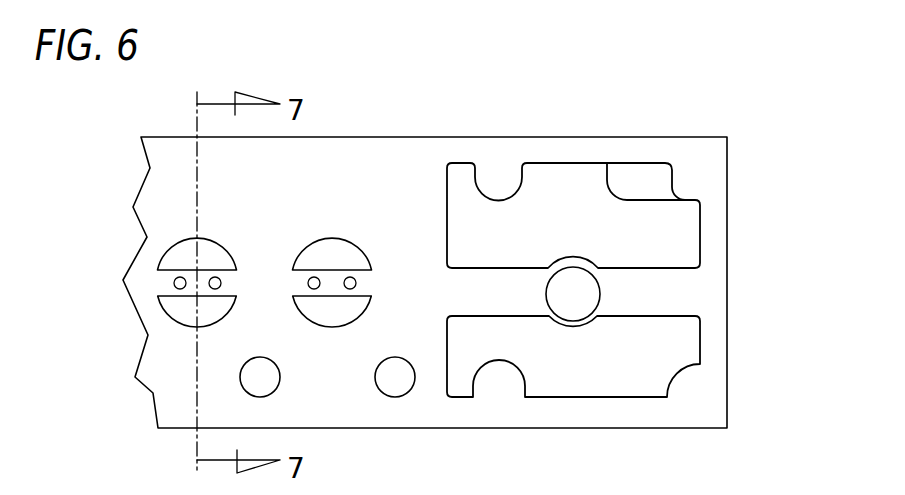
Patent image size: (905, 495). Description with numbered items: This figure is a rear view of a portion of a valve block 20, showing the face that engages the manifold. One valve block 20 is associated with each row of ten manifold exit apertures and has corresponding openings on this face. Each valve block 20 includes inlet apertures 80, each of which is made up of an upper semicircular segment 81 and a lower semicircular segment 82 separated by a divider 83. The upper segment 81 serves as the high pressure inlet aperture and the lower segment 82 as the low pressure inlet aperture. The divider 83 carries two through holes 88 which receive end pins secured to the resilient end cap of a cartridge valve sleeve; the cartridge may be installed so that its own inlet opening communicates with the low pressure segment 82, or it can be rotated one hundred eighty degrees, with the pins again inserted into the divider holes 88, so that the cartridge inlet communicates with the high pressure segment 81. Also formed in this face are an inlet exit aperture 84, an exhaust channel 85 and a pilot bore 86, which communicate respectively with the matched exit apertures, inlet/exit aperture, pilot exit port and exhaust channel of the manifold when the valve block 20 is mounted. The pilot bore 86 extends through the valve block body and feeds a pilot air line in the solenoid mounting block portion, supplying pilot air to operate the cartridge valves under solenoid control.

The valve block 20 is at (731, 179).
The inlet aperture 80 is at (251, 255).
The upper semicircular segment 81 is at (185, 258).
The lower semicircular segment 82 is at (342, 312).
The divider 83 is at (359, 282).
The inlet exit aperture 84 is at (262, 383).
The exhaust channel 85 is at (675, 337).
The pilot bore 86 is at (595, 303).
The through holes 88 is at (212, 289).